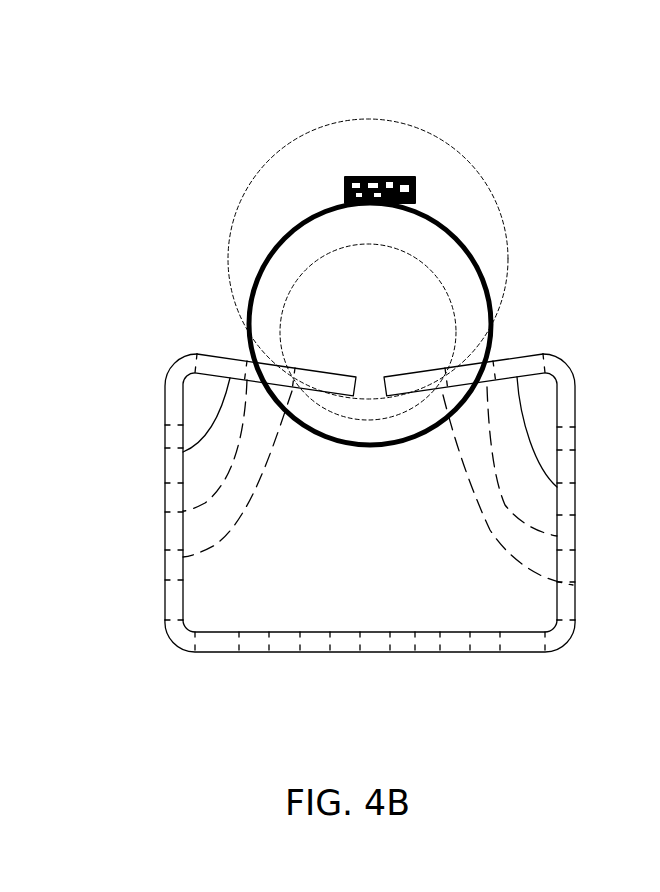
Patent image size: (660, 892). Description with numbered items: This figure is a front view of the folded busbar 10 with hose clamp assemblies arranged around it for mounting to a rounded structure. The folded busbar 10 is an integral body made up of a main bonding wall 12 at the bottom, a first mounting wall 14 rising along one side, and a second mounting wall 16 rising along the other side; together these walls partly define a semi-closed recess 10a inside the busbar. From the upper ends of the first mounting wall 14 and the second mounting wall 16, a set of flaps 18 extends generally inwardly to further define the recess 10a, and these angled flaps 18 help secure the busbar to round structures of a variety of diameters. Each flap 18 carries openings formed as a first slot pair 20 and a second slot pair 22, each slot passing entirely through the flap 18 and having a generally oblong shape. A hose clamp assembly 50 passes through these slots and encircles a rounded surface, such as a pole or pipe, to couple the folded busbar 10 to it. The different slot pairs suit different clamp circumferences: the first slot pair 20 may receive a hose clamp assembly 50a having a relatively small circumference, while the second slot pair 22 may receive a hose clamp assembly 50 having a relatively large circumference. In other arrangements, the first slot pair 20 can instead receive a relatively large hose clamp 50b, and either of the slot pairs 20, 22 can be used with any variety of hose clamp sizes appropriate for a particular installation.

The folded busbar 10 is at (167, 326).
The semi-closed recess 10a is at (484, 612).
The main bonding wall 12 is at (233, 645).
The first mounting wall 14 is at (574, 604).
The second mounting wall 16 is at (165, 579).
The flaps 18 is at (183, 452).
The first slot pair 20 is at (183, 557).
The second slot pair 22 is at (183, 512).
The hose clamp assembly 50 is at (298, 225).
The hose clamp assembly with relatively small circumference 50a is at (448, 300).
The relatively large hose clamp 50b is at (460, 152).